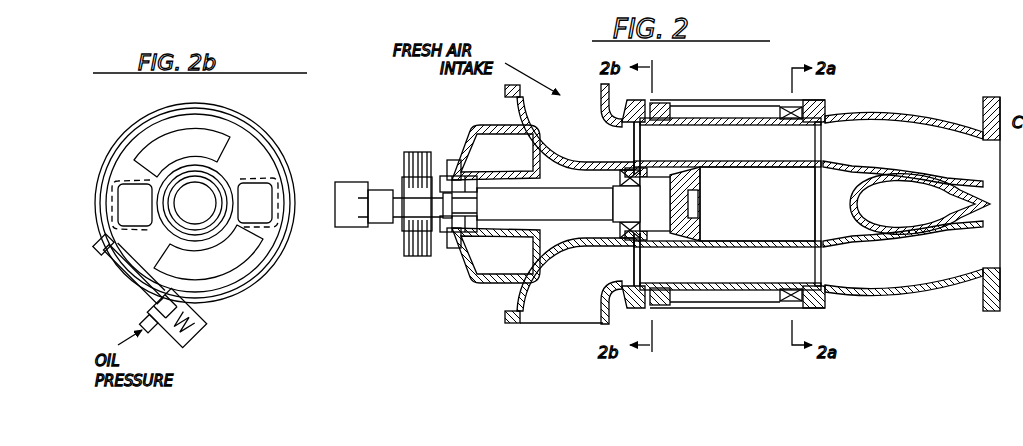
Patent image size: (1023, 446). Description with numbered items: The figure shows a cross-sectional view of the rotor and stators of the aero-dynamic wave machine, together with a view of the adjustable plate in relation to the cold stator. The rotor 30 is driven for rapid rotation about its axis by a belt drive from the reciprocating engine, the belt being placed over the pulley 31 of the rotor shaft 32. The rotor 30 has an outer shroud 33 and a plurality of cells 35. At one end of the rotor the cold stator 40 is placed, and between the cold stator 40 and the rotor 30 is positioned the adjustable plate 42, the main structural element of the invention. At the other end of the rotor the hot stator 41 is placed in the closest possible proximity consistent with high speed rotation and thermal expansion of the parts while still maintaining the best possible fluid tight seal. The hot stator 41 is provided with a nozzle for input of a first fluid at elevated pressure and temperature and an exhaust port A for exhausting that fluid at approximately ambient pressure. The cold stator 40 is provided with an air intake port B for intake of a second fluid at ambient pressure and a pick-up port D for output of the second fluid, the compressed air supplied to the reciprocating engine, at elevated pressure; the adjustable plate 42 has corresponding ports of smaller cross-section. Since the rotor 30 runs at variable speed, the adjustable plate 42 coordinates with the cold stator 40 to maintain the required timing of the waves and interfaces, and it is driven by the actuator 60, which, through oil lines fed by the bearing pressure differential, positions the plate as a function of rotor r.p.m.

In FIG. 2, the rotor 30 is at (762, 140).
In FIG. 2, the pulley 31 is at (412, 150).
In FIG. 2, the rotor shaft 32 is at (402, 207).
In FIG. 2, the outer shroud 33 is at (708, 128).
In FIG. 2, the cells 35 is at (692, 150).
In FIG. 2, the cold stator 40 is at (610, 88).
In FIG. 2b, the cold stator 40 is at (270, 134).
In FIG. 2, the hot stator 41 is at (832, 113).
In FIG. 2, the adjustable plate 42 is at (650, 258).
In FIG. 2b, the adjustable plate 42 is at (275, 343).
In FIG. 2b, the actuator 60 is at (196, 340).
In FIG. 2, the exhaust port A is at (847, 153).
In FIG. 2, the air intake port B is at (600, 148).
In FIG. 2b, the air intake port B is at (168, 148).
In FIG. 2b, the pick-up port D is at (256, 200).